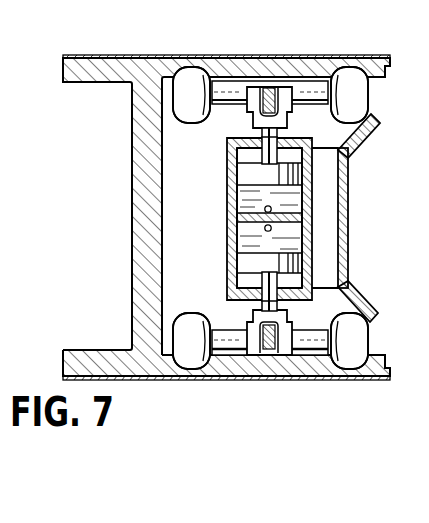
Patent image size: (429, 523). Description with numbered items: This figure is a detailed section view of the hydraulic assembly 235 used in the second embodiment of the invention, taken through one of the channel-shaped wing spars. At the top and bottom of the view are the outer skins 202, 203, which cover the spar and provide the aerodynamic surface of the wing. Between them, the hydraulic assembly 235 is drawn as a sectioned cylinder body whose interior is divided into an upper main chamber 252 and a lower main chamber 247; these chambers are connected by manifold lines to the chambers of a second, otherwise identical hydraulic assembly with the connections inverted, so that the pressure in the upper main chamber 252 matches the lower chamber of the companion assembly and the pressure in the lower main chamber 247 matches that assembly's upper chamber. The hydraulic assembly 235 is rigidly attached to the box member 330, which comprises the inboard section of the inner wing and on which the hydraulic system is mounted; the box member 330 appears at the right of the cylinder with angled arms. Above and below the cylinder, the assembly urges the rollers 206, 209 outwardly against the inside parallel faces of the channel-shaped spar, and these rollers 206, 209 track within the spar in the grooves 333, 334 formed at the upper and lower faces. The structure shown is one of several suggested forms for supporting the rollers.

The outer skin 202 is at (238, 56).
The outer skin 203 is at (250, 383).
The roller 206 is at (183, 102).
The roller 209 is at (183, 337).
The hydraulic assembly 235 is at (313, 212).
The lower main chamber 247 is at (247, 242).
The upper main chamber 252 is at (248, 198).
The box member 330 is at (376, 130).
The groove 333 is at (193, 66).
The groove 334 is at (196, 380).